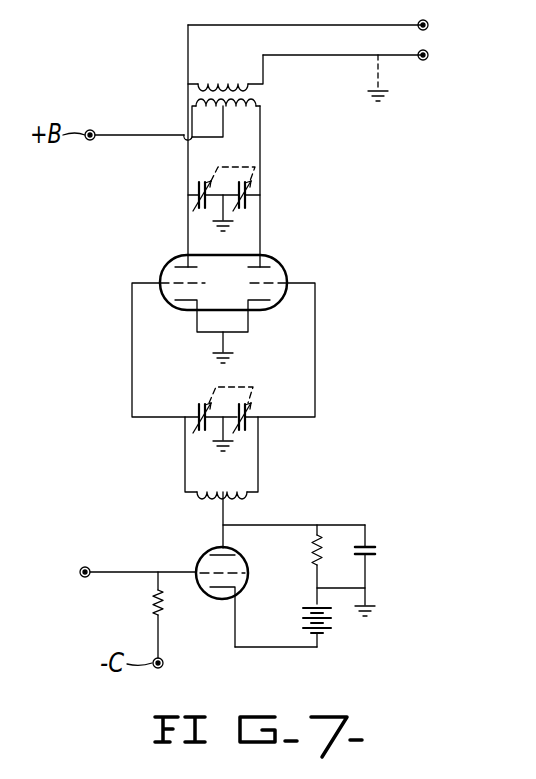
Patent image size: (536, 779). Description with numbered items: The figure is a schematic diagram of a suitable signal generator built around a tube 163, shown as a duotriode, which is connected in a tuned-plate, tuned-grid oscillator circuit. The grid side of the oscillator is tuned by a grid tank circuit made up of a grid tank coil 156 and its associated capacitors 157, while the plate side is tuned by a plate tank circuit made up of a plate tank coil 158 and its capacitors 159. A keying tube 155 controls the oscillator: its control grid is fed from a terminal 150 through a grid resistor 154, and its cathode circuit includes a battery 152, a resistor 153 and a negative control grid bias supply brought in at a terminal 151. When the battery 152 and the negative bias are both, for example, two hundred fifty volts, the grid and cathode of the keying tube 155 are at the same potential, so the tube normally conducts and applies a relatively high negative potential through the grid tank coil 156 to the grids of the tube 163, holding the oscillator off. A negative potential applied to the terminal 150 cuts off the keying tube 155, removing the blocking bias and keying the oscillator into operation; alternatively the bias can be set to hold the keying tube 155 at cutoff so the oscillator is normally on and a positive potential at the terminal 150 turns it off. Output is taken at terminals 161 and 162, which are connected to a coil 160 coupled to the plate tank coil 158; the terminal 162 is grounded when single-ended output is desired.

The terminal 150 is at (79, 572).
The bias terminal 151 is at (164, 662).
The battery 152 is at (303, 617).
The resistor 153 is at (313, 550).
The grid resistor 154 is at (153, 593).
The keying tube 155 is at (203, 550).
The grid tank coil 156 is at (243, 494).
The grid tank circuit capacitors 157 is at (240, 387).
The plate tank coil 158 is at (200, 104).
The plate tank circuit capacitors 159 is at (236, 167).
The coil 160 is at (203, 84).
The terminal 161 is at (429, 25).
The terminal 162 is at (429, 55).
The tube 163 is at (243, 254).